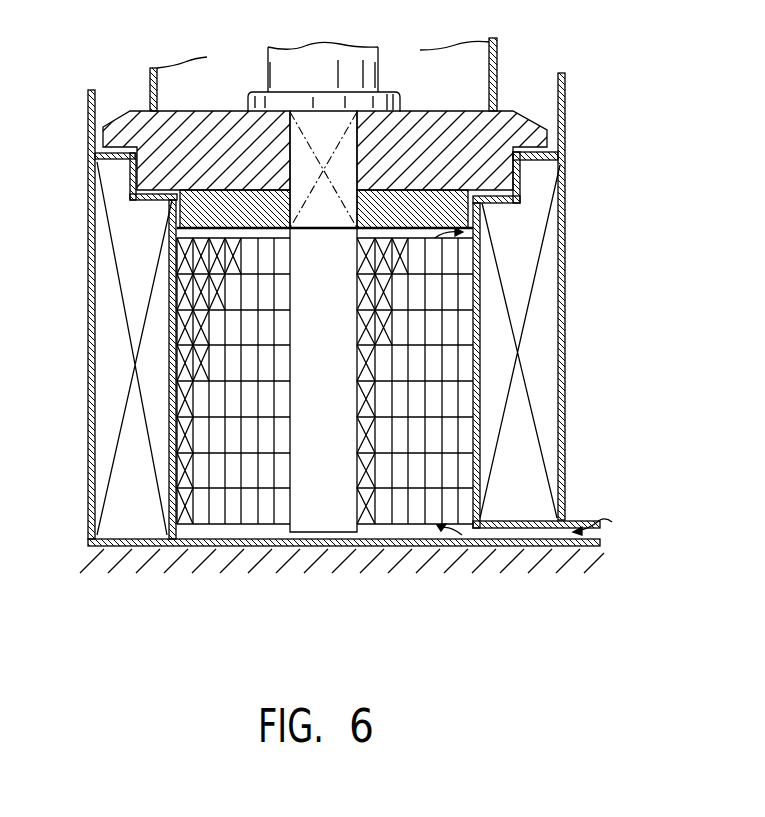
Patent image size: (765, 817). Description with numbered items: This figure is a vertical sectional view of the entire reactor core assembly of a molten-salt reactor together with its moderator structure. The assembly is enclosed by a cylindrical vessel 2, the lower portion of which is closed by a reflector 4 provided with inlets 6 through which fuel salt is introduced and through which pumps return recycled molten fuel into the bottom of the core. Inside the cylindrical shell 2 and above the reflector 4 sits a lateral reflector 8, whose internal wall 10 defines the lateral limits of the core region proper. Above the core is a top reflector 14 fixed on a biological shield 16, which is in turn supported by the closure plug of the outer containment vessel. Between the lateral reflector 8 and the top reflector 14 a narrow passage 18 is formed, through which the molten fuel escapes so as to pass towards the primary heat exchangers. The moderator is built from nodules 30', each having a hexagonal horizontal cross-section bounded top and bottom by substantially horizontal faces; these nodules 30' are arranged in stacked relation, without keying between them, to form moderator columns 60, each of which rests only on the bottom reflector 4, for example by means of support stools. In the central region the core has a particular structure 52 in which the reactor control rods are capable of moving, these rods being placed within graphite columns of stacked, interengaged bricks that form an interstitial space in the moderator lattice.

The cylindrical vessel 2 is at (92, 232).
The reflector 4 is at (318, 580).
The inlets 6 is at (567, 523).
The lateral reflector 8 is at (112, 372).
The internal wall 10 is at (467, 292).
The top reflector 14 is at (417, 203).
The biological shield 16 is at (215, 142).
The narrow passage 18 is at (135, 184).
The nodule 30' is at (292, 381).
The central structure 52 is at (335, 381).
The moderator column 60 is at (166, 293).